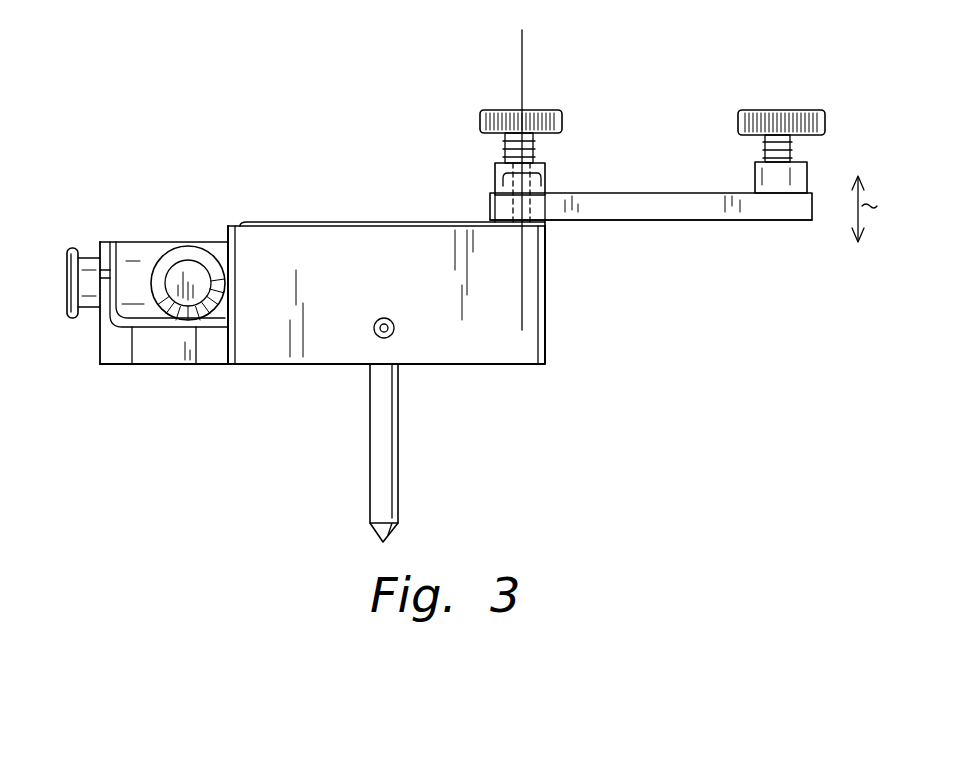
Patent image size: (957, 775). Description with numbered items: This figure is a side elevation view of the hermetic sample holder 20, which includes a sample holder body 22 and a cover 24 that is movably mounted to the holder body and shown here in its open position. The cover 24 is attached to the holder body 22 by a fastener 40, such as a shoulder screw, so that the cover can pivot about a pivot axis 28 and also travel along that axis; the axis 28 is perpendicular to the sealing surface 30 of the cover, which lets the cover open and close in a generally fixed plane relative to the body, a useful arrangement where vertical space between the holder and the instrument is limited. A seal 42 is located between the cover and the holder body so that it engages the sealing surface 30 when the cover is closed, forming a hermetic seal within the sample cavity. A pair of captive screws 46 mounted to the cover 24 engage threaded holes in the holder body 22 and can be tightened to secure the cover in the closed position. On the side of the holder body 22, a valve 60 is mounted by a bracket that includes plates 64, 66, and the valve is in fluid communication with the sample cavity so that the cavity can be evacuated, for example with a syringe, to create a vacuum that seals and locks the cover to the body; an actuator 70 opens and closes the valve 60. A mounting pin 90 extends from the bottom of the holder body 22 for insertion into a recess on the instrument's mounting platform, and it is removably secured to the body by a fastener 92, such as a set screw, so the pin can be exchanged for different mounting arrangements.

The hermetic sample holder 20 is at (341, 118).
The sample holder body 22 is at (473, 353).
The cover 24 is at (662, 200).
The pivot axis 28 is at (522, 247).
The sealing surface 30 is at (663, 222).
The fastener 40 is at (508, 176).
The seal 42 is at (298, 222).
The captive screws 46 is at (483, 112).
The valve 60 is at (138, 245).
The plate 64 is at (117, 362).
The plate 66 is at (177, 362).
The actuator 70 is at (187, 265).
The mounting pin 90 is at (398, 455).
The fastener 92 is at (374, 337).